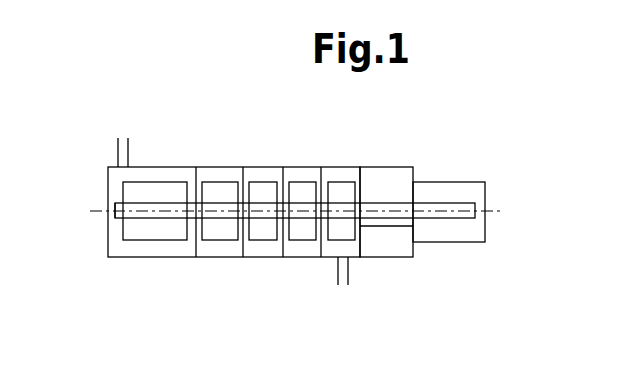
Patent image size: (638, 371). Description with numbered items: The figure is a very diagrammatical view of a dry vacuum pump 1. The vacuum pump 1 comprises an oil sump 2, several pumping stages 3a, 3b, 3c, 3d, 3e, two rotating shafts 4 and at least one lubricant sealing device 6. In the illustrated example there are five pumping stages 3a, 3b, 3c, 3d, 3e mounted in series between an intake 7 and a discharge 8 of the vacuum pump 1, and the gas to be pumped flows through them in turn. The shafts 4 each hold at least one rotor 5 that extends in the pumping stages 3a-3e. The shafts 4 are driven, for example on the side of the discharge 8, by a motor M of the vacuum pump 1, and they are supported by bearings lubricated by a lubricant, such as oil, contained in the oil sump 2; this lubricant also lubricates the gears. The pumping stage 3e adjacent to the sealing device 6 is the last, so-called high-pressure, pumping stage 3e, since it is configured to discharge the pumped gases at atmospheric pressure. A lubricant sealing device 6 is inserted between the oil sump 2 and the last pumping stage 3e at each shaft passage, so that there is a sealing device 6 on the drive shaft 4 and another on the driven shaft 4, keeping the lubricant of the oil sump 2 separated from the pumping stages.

The dry vacuum pump 1 is at (188, 88).
The oil sump 2 is at (400, 167).
The pumping stage 3a is at (155, 257).
The pumping stage 3b is at (218, 257).
The pumping stage 3c is at (263, 257).
The pumping stage 3d is at (303, 257).
The last pumping stage 3e is at (335, 167).
The rotating shaft 4 is at (463, 208).
The rotor 5 is at (132, 232).
The lubricant sealing device 6 is at (363, 218).
The intake 7 is at (117, 152).
The discharge 8 is at (337, 272).
The motor M is at (460, 242).